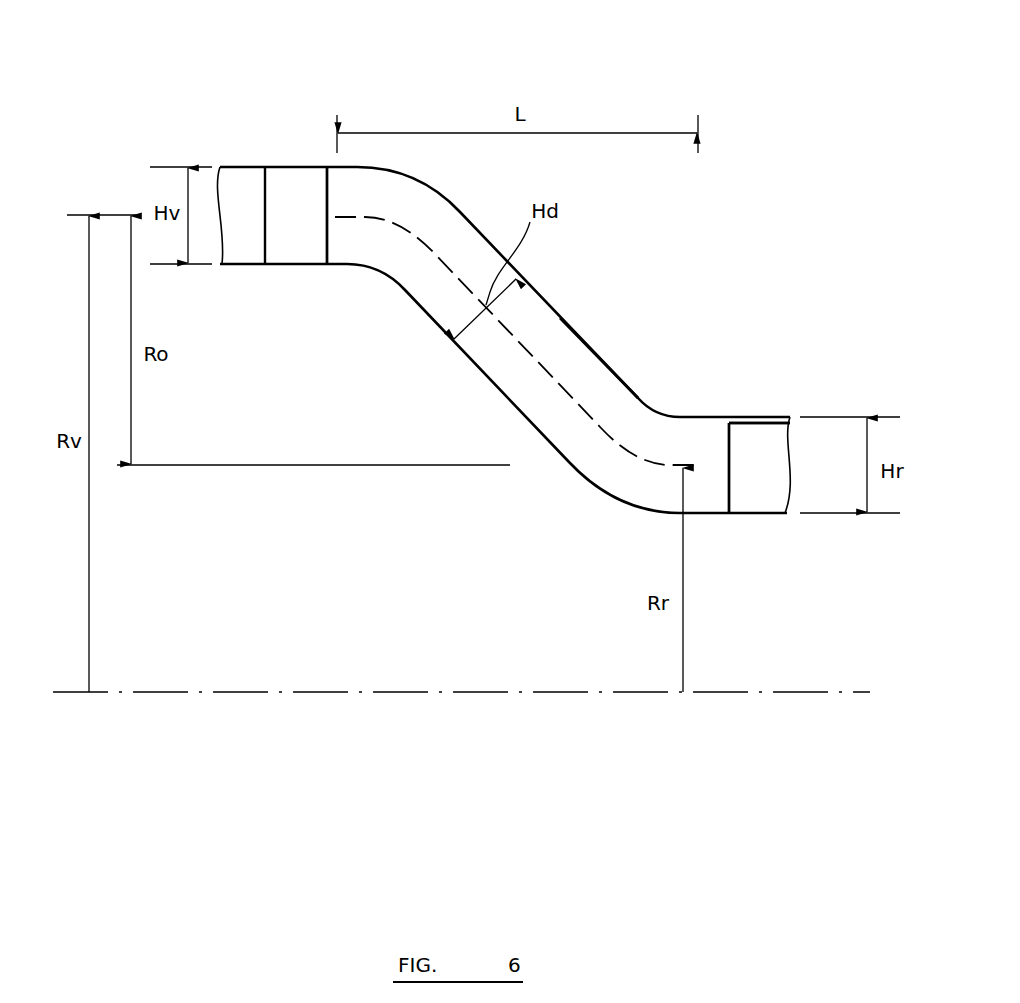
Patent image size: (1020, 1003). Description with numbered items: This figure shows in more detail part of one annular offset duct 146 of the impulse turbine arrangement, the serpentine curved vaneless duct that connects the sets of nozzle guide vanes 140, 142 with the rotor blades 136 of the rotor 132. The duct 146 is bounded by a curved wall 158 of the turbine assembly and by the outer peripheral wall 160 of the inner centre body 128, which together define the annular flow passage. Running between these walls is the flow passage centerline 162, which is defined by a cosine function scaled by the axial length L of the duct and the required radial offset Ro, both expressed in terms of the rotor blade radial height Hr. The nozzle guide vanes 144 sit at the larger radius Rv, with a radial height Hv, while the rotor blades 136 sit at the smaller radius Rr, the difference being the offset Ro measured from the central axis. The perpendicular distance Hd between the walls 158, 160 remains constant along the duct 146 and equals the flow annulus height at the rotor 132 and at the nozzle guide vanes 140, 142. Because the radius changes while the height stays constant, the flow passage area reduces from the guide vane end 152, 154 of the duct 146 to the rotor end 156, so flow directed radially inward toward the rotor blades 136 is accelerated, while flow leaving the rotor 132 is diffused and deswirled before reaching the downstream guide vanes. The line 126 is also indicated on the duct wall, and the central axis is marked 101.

The engine centerline axis 101 is at (410, 297).
The outer wall of transition section 126 is at (590, 345).
The inner centre body 128 is at (436, 437).
The rotor 132 is at (786, 390).
The rotor blades 136 is at (758, 437).
The first set of nozzle guide vanes 140 is at (256, 155).
The second set of nozzle guide vanes 142 is at (256, 155).
The nozzle guide vanes 144 is at (292, 193).
The annular offset duct 146 is at (562, 332).
The nozzle guide vane end of the annular offset duct 152 is at (352, 134).
The nozzle guide vane end of the annular offset duct 154 is at (327, 150).
The rotor end of the annular offset duct 156 is at (727, 412).
The curved wall 158 is at (458, 208).
The outer peripheral wall 160 is at (518, 418).
The flow passage centerline 162 is at (605, 432).